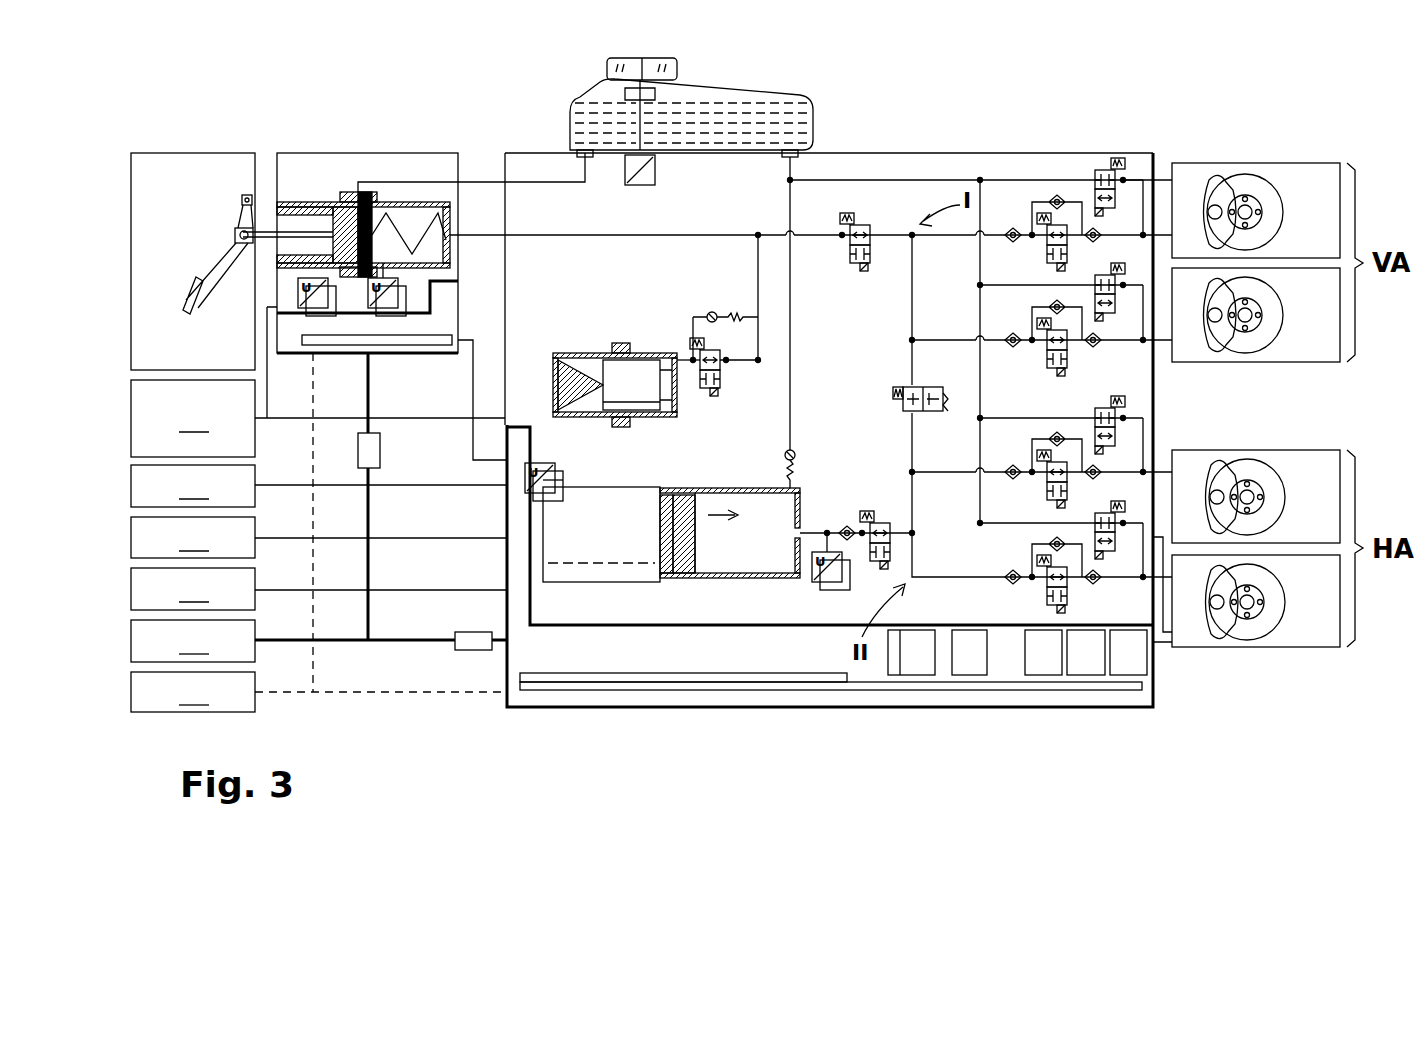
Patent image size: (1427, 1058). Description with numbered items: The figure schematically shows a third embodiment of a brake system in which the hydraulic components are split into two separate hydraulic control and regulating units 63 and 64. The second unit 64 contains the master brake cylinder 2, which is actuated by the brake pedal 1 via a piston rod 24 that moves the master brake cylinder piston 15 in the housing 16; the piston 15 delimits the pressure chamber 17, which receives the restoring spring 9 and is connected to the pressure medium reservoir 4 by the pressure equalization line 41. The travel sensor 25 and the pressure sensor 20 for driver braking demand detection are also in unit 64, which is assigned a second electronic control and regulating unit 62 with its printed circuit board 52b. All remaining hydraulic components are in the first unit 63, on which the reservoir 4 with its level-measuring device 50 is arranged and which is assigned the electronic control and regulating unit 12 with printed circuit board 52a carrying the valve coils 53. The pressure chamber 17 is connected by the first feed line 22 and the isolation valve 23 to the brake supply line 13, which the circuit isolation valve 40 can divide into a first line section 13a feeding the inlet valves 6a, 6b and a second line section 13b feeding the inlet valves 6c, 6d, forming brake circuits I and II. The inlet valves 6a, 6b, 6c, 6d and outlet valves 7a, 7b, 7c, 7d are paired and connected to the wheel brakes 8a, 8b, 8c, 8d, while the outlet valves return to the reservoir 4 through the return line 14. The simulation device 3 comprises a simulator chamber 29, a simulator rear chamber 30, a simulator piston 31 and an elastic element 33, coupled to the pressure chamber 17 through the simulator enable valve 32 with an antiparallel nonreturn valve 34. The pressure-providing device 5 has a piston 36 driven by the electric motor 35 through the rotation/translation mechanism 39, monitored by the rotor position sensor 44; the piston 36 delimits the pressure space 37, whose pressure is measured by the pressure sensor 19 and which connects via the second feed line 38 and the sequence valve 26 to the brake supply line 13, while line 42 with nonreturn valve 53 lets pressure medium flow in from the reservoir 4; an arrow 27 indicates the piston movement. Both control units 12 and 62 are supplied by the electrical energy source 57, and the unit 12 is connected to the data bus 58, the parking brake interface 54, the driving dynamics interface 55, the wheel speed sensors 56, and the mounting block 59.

The brake pedal 1 is at (228, 245).
The master brake cylinder 2 is at (356, 182).
The simulation device 3 is at (551, 335).
The pressure medium reservoir 4 is at (745, 105).
The pressure-providing device 5 is at (722, 488).
The inlet valve 6a is at (1045, 250).
The inlet valve 6b is at (1045, 355).
The inlet valve 6c is at (1045, 490).
The inlet valve 6d is at (1045, 595).
The outlet valve 7a is at (1113, 195).
The outlet valve 7b is at (1113, 300).
The outlet valve 7c is at (1113, 433).
The outlet valve 7d is at (1113, 546).
The wheel brake 8a is at (1220, 195).
The wheel brake 8b is at (1222, 335).
The wheel brake 8c is at (1222, 478).
The wheel brake 8d is at (1222, 620).
The restoring spring 9 is at (400, 220).
The electronic control and regulating unit 12 is at (860, 708).
The brake supply line 13 is at (892, 306).
The first line section 13a is at (915, 305).
The second line section 13b is at (915, 500).
The return line 14 is at (905, 190).
The master brake cylinder piston 15 is at (338, 220).
The housing 16 is at (366, 168).
The pressure chamber 17 is at (433, 213).
The pressure sensor 19 is at (812, 585).
The pressure sensor 20 is at (372, 312).
The first feed line 22 is at (590, 232).
The isolation valve 23 is at (850, 252).
The piston rod 24 is at (266, 232).
The travel sensor 25 is at (297, 290).
The sequence valve 26 is at (885, 520).
The direction arrow 27 is at (715, 524).
The simulator chamber 29 is at (680, 400).
The simulator rear chamber 30 is at (598, 412).
The simulator piston 31 is at (648, 365).
The simulator enable valve 32 is at (722, 370).
The elastic element 33 is at (583, 375).
The nonreturn valve 34 is at (715, 312).
The electric motor 35 is at (585, 575).
The piston 36 is at (690, 568).
The pressure space 37 is at (760, 575).
The second feed line 38 is at (813, 530).
The rotation/translation mechanism 39 is at (662, 530).
The circuit isolation valve 40 is at (925, 386).
The pressure equalization line 41 is at (487, 180).
The line 42 is at (793, 358).
The rotor position sensor 44 is at (540, 460).
The level-measuring device 50 is at (670, 168).
The printed circuit board 52a is at (745, 690).
The printed circuit board 52b is at (420, 346).
The nonreturn valve 53 is at (795, 450).
The human-machine interface 54 is at (319, 486).
The interface 55 is at (319, 537).
The wheel rotational speed sensors 56 is at (319, 589).
The electrical energy source 57 is at (319, 507).
The data bus 58 is at (319, 532).
The block 59 is at (318, 418).
The second electronic control and regulating unit 62 is at (450, 298).
The hydraulic control and regulating unit 63 is at (1068, 148).
The hydraulic control and regulating unit 64 is at (440, 146).